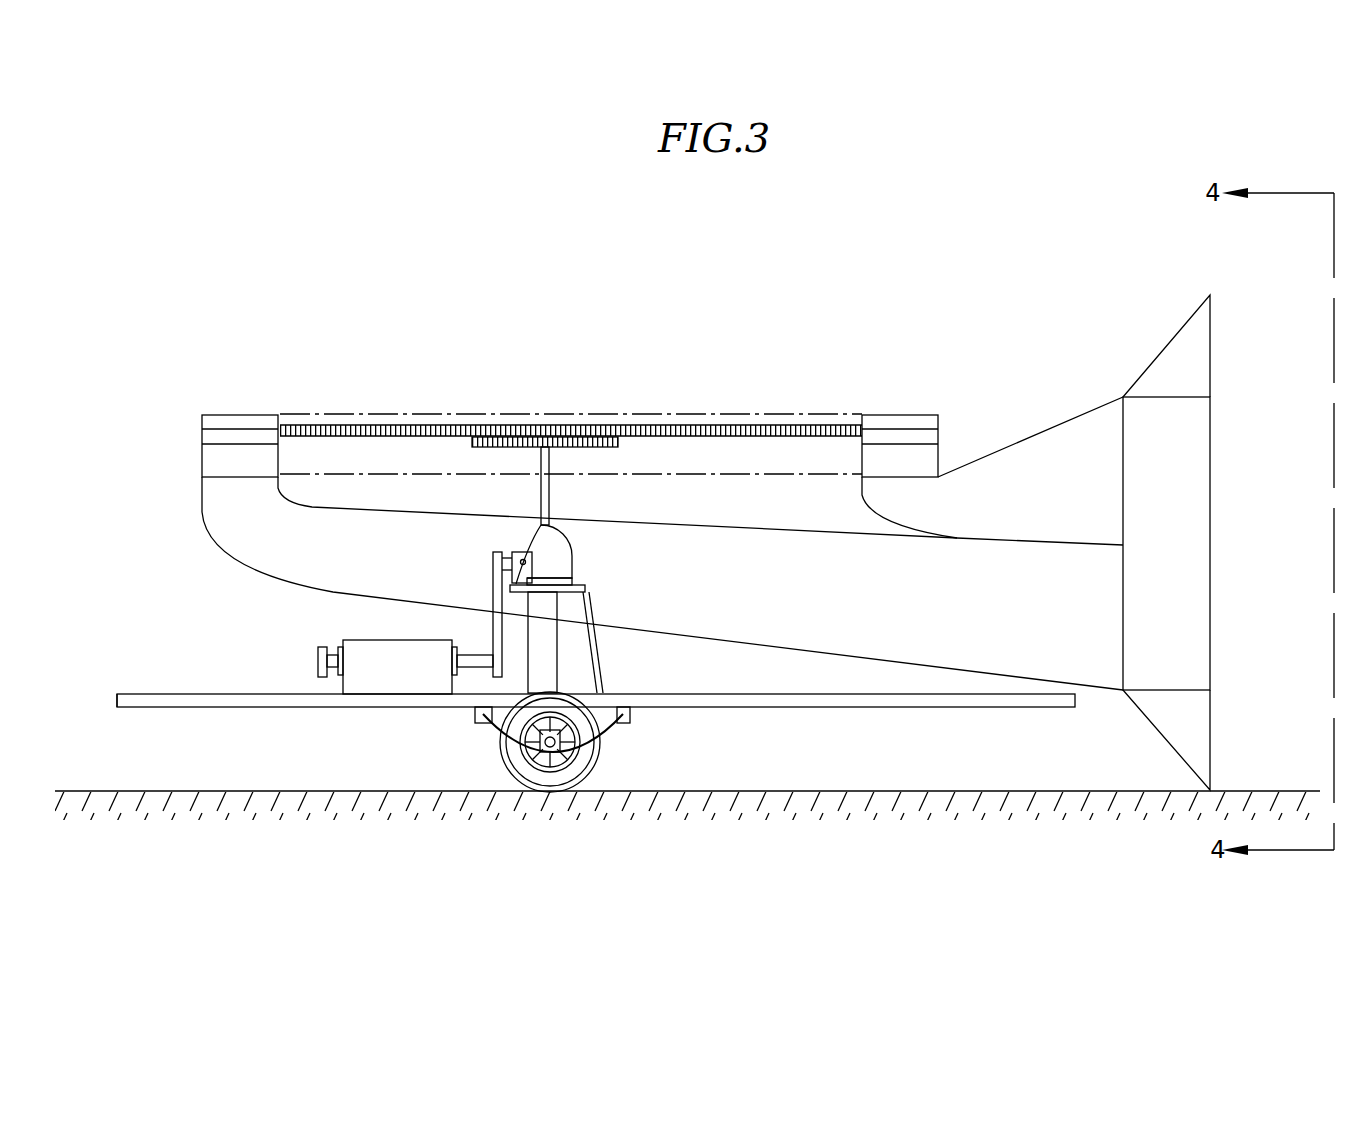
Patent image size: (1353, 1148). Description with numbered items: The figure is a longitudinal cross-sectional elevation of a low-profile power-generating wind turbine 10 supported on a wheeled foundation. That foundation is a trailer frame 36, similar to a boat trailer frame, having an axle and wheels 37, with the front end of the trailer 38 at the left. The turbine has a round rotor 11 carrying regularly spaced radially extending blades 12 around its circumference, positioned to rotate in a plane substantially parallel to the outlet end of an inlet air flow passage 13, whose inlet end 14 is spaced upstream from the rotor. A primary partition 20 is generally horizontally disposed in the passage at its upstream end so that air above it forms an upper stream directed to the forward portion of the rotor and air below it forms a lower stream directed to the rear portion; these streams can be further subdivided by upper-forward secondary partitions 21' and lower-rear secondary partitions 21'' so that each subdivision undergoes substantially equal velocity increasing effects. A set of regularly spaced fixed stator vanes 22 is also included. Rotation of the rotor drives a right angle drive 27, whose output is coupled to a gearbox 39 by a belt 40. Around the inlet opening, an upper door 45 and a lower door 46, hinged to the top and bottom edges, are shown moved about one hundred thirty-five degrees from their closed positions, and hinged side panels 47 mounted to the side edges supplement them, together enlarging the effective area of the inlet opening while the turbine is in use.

The wind turbine 10 is at (876, 345).
The rotor 11 is at (435, 430).
The blades 12 is at (226, 430).
The inlet air flow passage 13 is at (1058, 410).
The inlet end 14 is at (1125, 503).
The primary partition 20 is at (1090, 545).
The upper-forward secondary partitions 21' is at (1211, 441).
The lower-rear secondary partitions 21'' is at (1211, 613).
The fixed stator vanes 22 is at (227, 460).
The right angle drive 27 is at (527, 552).
The trailer frame 36 is at (273, 694).
The wheels 37 is at (580, 760).
The front end of the trailer 38 is at (117, 700).
The gearbox 39 is at (398, 675).
The belt 40 is at (493, 592).
The upper door 45 is at (1163, 342).
The lower door 46 is at (1160, 740).
The side panels 47 is at (1175, 545).